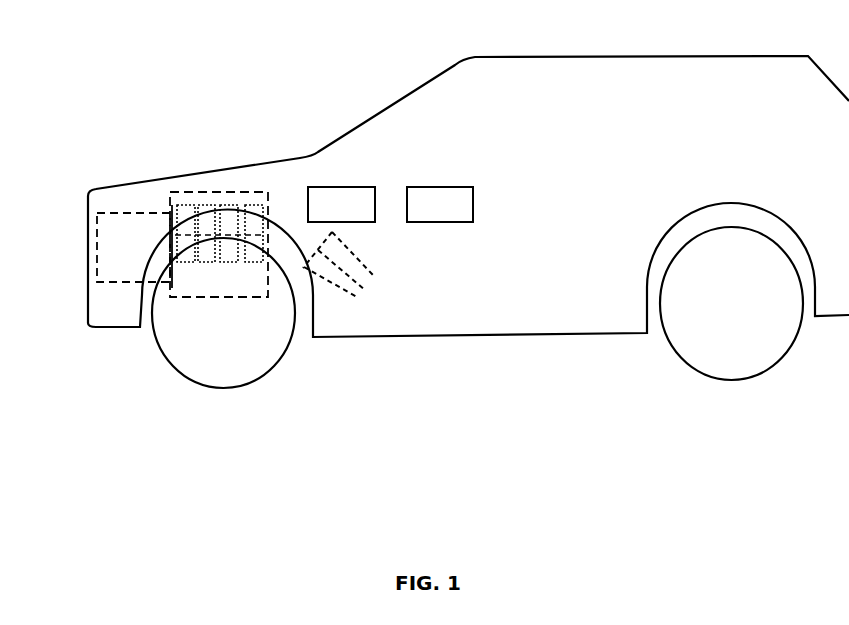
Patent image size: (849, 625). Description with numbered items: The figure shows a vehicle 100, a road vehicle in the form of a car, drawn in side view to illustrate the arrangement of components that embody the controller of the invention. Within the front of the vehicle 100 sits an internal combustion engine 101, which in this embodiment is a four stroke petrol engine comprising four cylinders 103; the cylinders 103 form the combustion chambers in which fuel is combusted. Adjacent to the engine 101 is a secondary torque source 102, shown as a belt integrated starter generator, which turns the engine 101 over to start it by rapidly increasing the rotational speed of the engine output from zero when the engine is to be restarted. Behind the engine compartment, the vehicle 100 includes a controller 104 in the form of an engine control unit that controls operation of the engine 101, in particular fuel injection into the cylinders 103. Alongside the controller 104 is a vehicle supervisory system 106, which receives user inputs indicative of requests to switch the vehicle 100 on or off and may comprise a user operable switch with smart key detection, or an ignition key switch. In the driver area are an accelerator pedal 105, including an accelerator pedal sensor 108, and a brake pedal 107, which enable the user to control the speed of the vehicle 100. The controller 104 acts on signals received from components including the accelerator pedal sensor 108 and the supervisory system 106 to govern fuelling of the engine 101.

The vehicle 100 is at (322, 87).
The internal combustion engine 101 is at (216, 190).
The secondary torque source 102 is at (132, 225).
The cylinders 103 is at (250, 215).
The controller 104 is at (341, 204).
The accelerator pedal 105 is at (362, 292).
The vehicle supervisory system 106 is at (440, 204).
The brake pedal 107 is at (373, 277).
The accelerator pedal sensor 108 is at (320, 277).